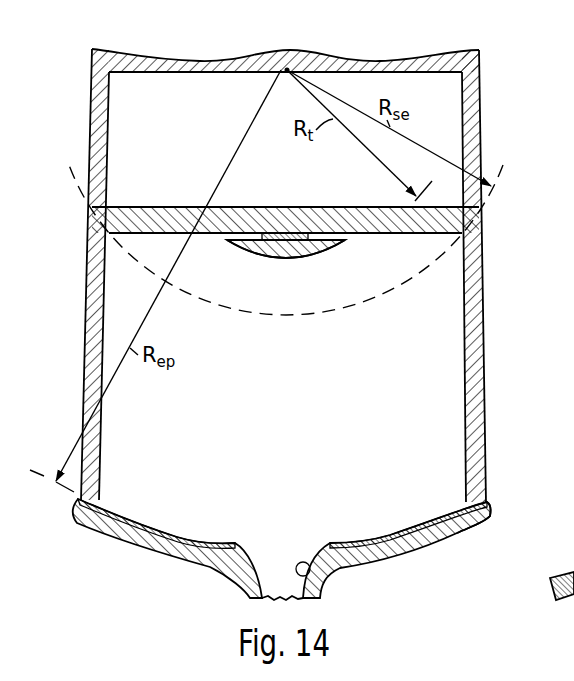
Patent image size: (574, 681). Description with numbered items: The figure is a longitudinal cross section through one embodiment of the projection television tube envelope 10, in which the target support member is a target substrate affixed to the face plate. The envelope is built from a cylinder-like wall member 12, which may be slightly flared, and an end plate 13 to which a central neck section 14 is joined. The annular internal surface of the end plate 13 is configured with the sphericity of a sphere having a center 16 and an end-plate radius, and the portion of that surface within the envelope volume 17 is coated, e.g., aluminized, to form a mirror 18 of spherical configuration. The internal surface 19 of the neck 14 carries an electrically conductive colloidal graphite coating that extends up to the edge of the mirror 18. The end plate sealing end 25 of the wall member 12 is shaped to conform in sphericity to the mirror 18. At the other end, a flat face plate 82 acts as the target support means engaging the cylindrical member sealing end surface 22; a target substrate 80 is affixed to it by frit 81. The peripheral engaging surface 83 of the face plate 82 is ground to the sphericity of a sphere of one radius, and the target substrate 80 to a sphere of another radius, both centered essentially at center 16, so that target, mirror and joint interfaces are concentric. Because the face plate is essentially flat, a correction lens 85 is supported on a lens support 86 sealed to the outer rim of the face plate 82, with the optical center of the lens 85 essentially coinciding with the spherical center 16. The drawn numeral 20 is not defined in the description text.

The projection television tube envelope 10 is at (562, 576).
The cylinder-like wall member 12 is at (98, 312).
The end plate 13 is at (395, 540).
The central neck section 14 is at (250, 592).
The center 16 is at (287, 68).
The envelope volume 17 is at (294, 453).
The mirror 18 is at (405, 527).
The internal surface of neck 19 is at (322, 595).
The lens surface 20 is at (243, 257).
The cylindrical member sealing end surface 22 is at (516, 244).
The end plate sealing end 25 is at (483, 521).
The target substrate 80 is at (302, 259).
The frit 81 is at (285, 233).
The face plate 82 is at (138, 222).
The peripheral engaging surface 83 is at (474, 226).
The correction lens 85 is at (432, 62).
The lens support 86 is at (472, 107).